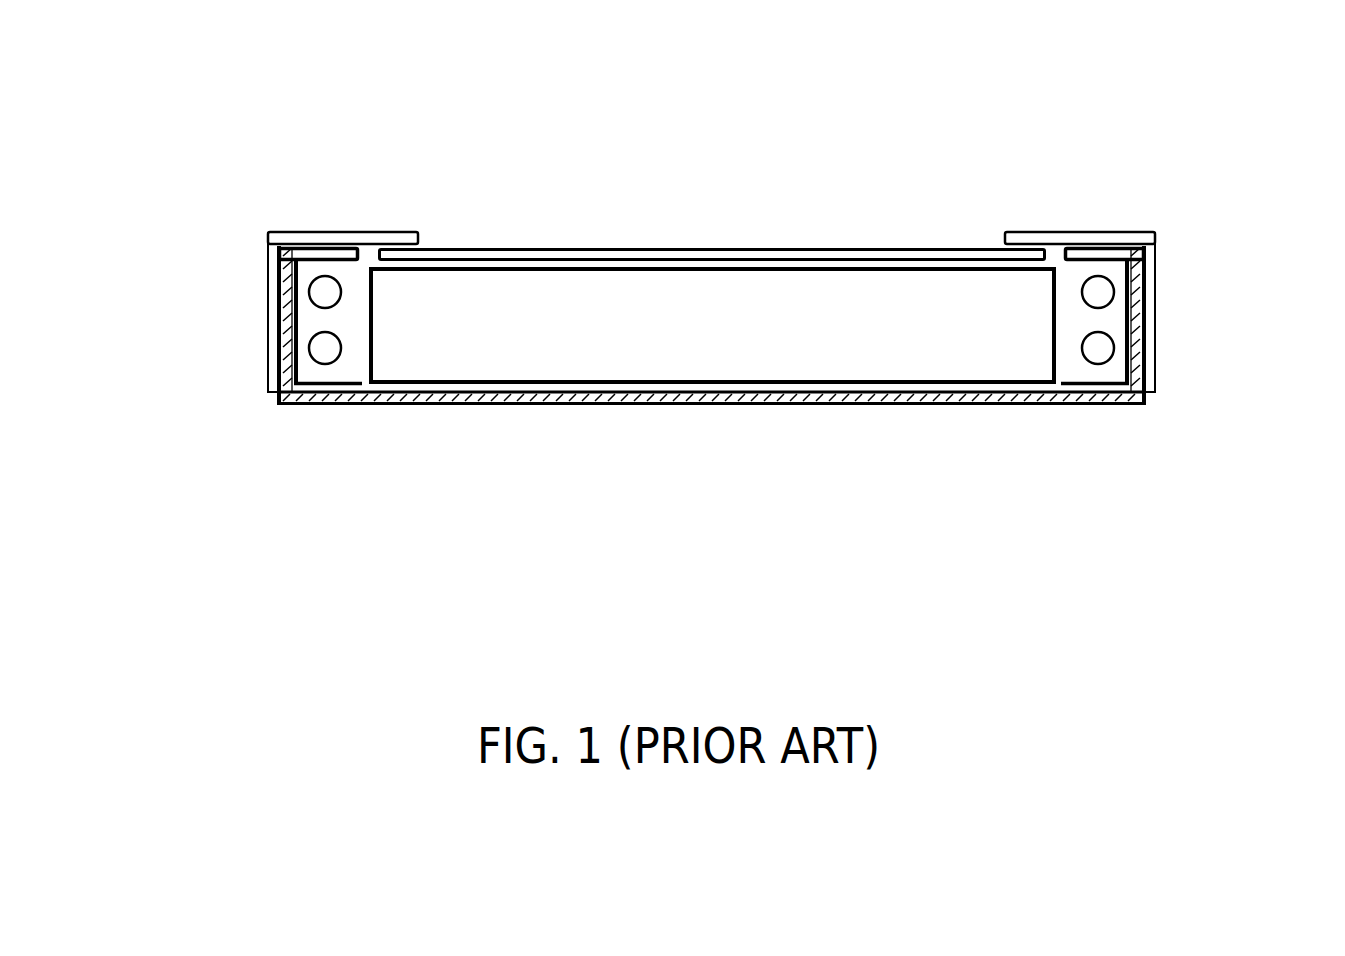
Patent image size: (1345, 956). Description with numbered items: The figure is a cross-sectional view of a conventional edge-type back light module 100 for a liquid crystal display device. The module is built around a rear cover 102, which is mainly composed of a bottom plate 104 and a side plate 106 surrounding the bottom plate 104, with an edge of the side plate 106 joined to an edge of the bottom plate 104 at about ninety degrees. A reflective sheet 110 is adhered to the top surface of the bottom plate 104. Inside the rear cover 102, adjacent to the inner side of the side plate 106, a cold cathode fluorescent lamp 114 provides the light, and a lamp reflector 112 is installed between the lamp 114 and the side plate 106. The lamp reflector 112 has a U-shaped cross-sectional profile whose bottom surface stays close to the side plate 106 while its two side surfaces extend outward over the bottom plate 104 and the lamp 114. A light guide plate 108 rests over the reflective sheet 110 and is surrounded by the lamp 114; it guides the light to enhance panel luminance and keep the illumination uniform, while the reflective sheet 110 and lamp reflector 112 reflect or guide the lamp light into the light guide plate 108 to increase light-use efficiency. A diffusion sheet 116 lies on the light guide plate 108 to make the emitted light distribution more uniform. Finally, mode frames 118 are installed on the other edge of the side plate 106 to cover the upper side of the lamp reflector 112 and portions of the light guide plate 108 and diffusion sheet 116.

The back light module 100 is at (160, 140).
The rear cover 102 is at (512, 410).
The bottom plate 104 is at (742, 398).
The side plate 106 is at (1138, 360).
The light guide plate 108 is at (812, 283).
The reflective sheet 110 is at (893, 380).
The lamp reflector 112 is at (294, 307).
The cold cathode fluorescent lamp 114 is at (325, 275).
The diffusion sheet 116 is at (690, 249).
The mode frames 118 is at (372, 233).